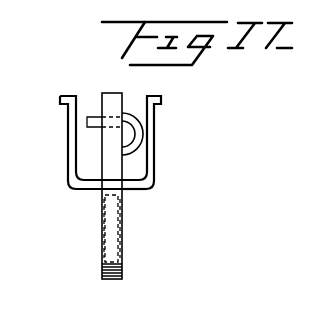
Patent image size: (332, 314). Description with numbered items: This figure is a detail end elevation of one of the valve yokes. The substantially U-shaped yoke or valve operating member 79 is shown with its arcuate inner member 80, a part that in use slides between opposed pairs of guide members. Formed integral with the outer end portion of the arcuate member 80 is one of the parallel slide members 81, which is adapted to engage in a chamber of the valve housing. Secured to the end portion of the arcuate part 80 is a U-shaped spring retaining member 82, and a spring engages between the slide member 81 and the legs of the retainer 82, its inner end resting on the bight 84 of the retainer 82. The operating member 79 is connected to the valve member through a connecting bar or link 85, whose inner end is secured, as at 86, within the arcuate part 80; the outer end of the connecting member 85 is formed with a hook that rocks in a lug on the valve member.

The valve operating member 79 is at (113, 279).
The arcuate inner member 80 is at (122, 229).
The slide member 81 is at (105, 132).
The spring retaining member 82 is at (155, 159).
The bight 84 is at (133, 190).
The connecting bar 85 is at (100, 220).
The securing point 86 is at (137, 138).